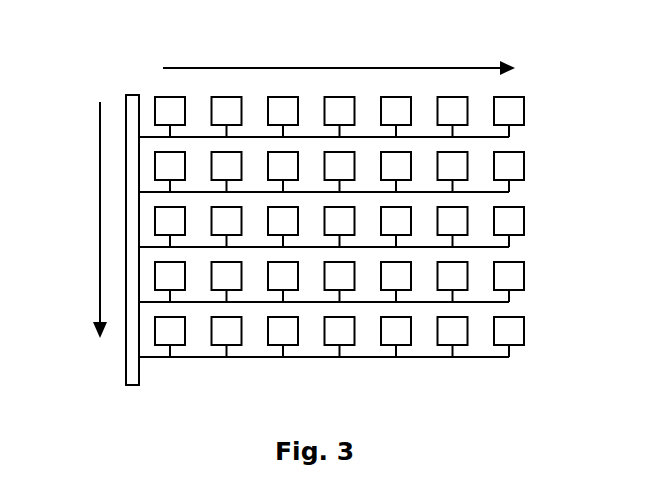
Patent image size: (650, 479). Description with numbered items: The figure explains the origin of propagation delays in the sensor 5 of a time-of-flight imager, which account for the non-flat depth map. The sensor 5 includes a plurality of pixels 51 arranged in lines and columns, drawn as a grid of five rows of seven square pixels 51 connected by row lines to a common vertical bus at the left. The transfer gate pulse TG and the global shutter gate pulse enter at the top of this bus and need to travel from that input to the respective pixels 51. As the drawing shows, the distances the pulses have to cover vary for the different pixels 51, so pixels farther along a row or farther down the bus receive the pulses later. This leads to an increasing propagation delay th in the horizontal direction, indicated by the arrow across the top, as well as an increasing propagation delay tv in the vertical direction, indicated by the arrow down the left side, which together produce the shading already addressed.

The sensor 5 is at (373, 254).
The pixels 51 is at (524, 108).
The transfer gate pulse TG is at (132, 82).
The horizontal propagation delay th is at (339, 54).
The vertical propagation delay tv is at (83, 220).